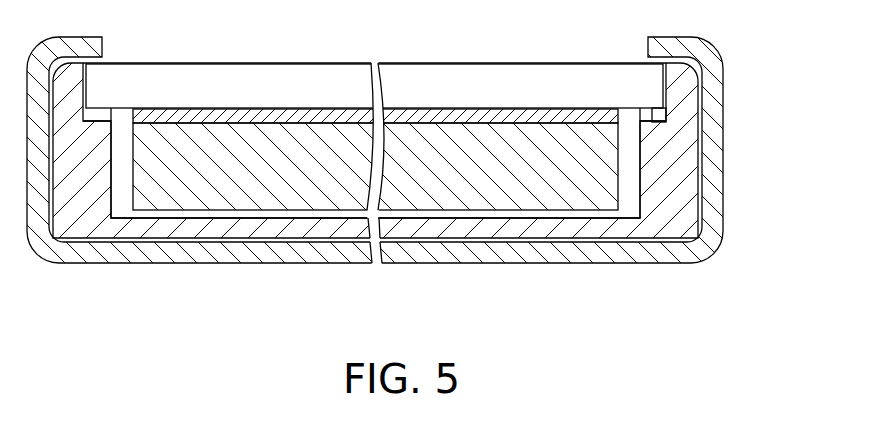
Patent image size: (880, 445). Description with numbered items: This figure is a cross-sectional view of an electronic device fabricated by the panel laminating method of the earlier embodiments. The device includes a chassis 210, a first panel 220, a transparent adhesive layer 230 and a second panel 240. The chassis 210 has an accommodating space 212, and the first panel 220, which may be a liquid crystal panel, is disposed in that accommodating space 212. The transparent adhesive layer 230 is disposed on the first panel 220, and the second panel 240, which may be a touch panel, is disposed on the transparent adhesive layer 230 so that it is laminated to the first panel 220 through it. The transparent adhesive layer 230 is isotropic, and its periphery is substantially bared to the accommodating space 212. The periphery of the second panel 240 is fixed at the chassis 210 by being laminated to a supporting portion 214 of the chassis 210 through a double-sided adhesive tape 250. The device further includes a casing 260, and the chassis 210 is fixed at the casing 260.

The chassis 210 is at (685, 173).
The accommodating space 212 is at (632, 212).
The supporting portion 214 is at (652, 128).
The first panel 220 is at (538, 193).
The transparent adhesive layer 230 is at (542, 112).
The second panel 240 is at (485, 83).
The double-sided adhesive tape 250 is at (657, 117).
The casing 260 is at (712, 213).